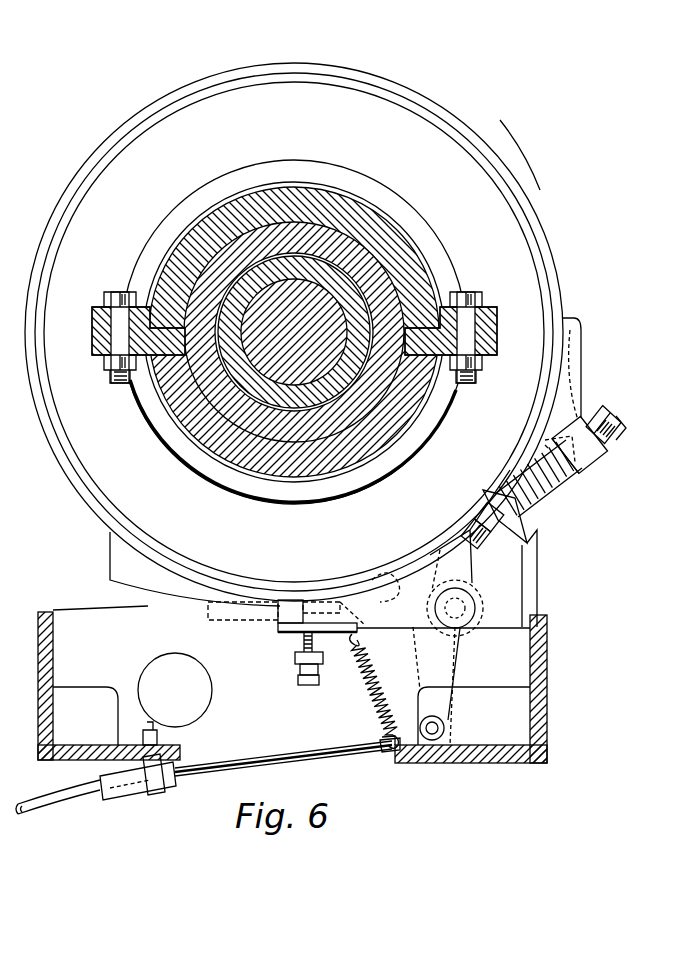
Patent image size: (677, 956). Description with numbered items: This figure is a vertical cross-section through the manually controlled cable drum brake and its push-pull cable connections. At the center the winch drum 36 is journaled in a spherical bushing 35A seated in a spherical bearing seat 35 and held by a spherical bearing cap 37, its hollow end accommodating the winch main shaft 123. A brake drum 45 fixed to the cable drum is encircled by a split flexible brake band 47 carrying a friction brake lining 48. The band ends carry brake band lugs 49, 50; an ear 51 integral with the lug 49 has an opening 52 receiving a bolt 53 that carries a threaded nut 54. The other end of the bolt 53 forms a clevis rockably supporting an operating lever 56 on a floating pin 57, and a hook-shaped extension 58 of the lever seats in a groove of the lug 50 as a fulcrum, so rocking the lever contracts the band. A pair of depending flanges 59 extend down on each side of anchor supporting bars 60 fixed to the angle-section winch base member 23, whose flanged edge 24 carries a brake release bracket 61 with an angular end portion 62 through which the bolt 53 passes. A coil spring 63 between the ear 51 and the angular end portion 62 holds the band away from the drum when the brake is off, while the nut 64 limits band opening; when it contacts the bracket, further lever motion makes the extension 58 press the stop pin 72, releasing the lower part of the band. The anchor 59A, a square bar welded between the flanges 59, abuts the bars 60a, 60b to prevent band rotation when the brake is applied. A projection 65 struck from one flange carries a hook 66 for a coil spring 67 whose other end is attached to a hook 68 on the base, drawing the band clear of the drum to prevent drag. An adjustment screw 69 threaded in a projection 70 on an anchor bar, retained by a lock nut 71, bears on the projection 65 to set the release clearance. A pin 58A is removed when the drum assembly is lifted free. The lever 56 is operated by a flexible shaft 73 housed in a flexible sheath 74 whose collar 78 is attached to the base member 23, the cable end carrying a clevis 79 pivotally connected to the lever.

The winch base member 23 is at (512, 770).
The flanged edge 24 is at (552, 672).
The spherical bearing seat 35 is at (222, 462).
The spherical bushing 35A is at (368, 280).
The winch drum 36 is at (168, 217).
The spherical bearing cap 37 is at (356, 214).
The brake drum 45 is at (480, 258).
The brake band 47 is at (478, 122).
The friction brake lining 48 is at (511, 158).
The brake band lug 49 is at (592, 356).
The brake band lug 50 is at (540, 562).
The ear 51 is at (604, 470).
The opening 52 is at (610, 456).
The bolt 53 is at (620, 400).
The nut 54 is at (624, 422).
The operating lever 56 is at (452, 704).
The floating pin 57 is at (464, 606).
The hook-shaped extension 58 is at (432, 590).
The pin 58A is at (446, 728).
The depending flange 59 is at (110, 566).
The anchor 59A is at (290, 600).
The anchor supporting bar 60 is at (222, 752).
The bar 60a is at (230, 600).
The bar 60b is at (316, 600).
The brake release bracket 61 is at (540, 590).
The angular end portion 62 is at (540, 530).
The coil spring 63 is at (575, 484).
The nut 64 is at (540, 548).
The projection 65 is at (280, 630).
The hook 66 is at (366, 642).
The coil spring 67 is at (362, 698).
The hook 68 is at (392, 760).
The adjustment screw 69 is at (300, 652).
The projection 70 is at (296, 660).
The lock nut 71 is at (319, 676).
The stop pin 72 is at (372, 580).
The flexible shaft 73 is at (236, 765).
The flexible sheath 74 is at (76, 800).
The collar 78 is at (138, 796).
The clevis 79 is at (358, 754).
The winch main shaft 123 is at (262, 352).